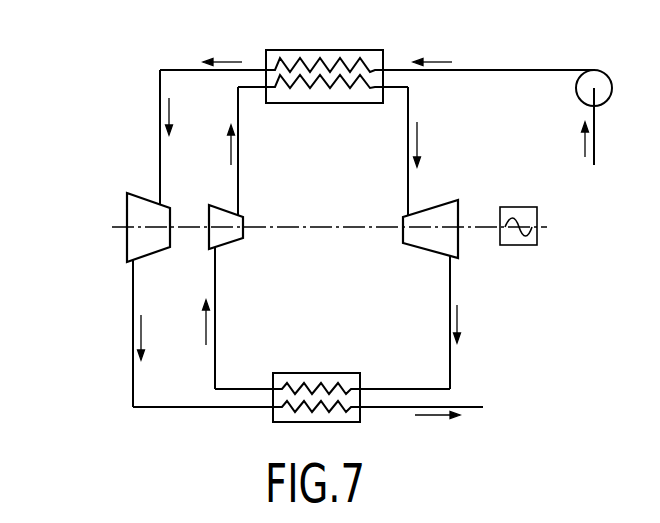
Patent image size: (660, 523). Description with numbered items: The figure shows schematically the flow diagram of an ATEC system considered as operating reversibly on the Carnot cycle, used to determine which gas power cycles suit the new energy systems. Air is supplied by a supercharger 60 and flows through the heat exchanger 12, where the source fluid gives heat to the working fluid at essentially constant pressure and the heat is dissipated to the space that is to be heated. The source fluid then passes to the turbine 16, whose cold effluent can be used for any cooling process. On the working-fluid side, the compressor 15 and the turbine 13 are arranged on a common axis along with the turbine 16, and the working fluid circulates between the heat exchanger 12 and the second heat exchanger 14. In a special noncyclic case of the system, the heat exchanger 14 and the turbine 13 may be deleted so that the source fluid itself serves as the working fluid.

The heat exchanger 12 is at (292, 50).
The turbine 13 is at (420, 212).
The heat exchanger 14 is at (328, 422).
The compressor 15 is at (243, 220).
The turbine 16 is at (170, 208).
The supercharger 60 is at (606, 59).